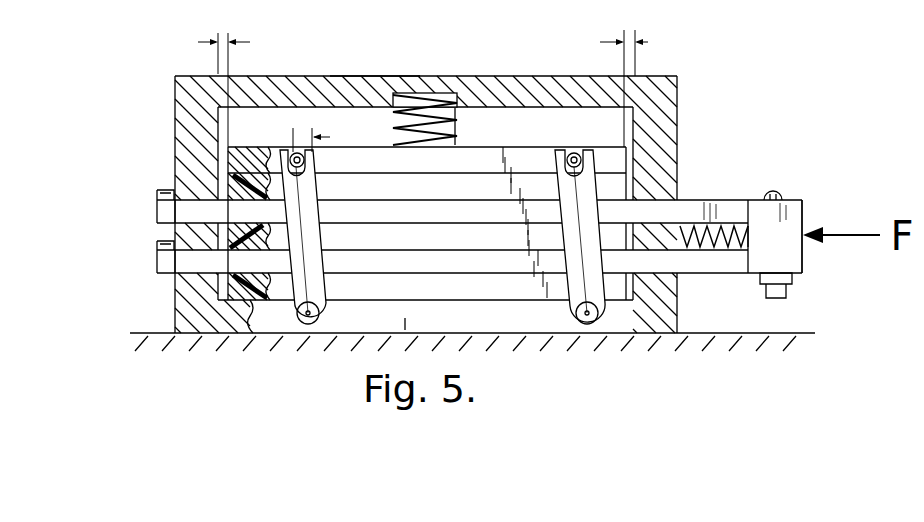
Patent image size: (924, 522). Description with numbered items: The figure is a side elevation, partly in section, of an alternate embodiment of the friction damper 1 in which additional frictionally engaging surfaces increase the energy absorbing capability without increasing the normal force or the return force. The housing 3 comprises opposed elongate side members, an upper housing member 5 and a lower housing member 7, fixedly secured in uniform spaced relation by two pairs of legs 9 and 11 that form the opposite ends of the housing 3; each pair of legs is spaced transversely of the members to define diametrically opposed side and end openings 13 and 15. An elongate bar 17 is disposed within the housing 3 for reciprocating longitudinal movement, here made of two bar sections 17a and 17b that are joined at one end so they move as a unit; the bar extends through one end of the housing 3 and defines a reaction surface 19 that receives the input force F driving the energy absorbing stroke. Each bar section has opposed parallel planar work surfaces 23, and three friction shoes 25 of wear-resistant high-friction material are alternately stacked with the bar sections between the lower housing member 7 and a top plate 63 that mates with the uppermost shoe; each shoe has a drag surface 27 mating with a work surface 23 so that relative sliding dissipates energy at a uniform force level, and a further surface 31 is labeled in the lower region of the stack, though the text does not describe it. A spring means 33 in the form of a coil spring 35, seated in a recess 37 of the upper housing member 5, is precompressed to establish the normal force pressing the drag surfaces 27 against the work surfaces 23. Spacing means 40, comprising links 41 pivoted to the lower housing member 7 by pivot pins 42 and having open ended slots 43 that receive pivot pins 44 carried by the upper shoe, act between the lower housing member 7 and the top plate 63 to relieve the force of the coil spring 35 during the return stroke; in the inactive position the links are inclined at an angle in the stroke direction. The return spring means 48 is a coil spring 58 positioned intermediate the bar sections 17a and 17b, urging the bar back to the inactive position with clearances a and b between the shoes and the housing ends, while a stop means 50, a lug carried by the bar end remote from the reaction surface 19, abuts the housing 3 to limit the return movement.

The damper 1 is at (523, 37).
The housing 3 is at (336, 75).
The upper housing member 5 is at (385, 75).
The lower housing member 7 is at (472, 326).
The legs 9 is at (176, 106).
The legs 11 is at (678, 120).
The side openings 13 is at (563, 122).
The end openings 15 is at (175, 195).
The bar 17 is at (806, 203).
The bar section 17a is at (740, 266).
The bar section 17b is at (750, 210).
The reaction surface 19 is at (805, 255).
The work surfaces 23 is at (335, 228).
The friction shoes 25 is at (408, 199).
The drag surface 27 is at (343, 180).
The bottom surface 31 is at (398, 326).
The spring means 33 is at (458, 134).
The coil spring 35 is at (392, 132).
The recess 37 is at (461, 97).
The spacing means 40 is at (327, 297).
The links 41 is at (272, 312).
The pivot pins 42 is at (304, 320).
The open ended slots 43 is at (291, 137).
The pivot pins 44 is at (298, 152).
The spring means 48 is at (750, 247).
The stop means 50 is at (156, 245).
The coil spring 58 is at (722, 240).
The top plate 63 is at (485, 176).
The clearance a is at (214, 87).
The clearance b is at (635, 87).